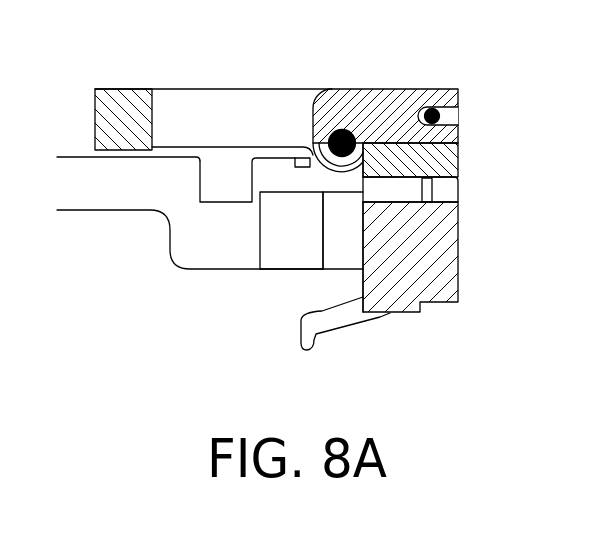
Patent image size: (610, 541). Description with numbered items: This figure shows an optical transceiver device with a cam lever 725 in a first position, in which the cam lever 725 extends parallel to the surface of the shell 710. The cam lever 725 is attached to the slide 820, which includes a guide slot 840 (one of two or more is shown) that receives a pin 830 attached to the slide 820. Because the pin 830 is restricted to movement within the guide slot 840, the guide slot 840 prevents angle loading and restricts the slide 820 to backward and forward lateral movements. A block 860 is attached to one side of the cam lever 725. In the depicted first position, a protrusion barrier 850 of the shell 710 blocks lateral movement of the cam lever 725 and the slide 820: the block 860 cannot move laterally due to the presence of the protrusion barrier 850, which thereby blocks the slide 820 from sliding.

The shell 710 is at (345, 248).
The cam lever 725 is at (257, 100).
The slide 820 is at (383, 98).
The pin 830 is at (433, 110).
The guide slot 840 is at (452, 107).
The protrusion barrier 850 is at (290, 257).
The block 860 is at (212, 183).